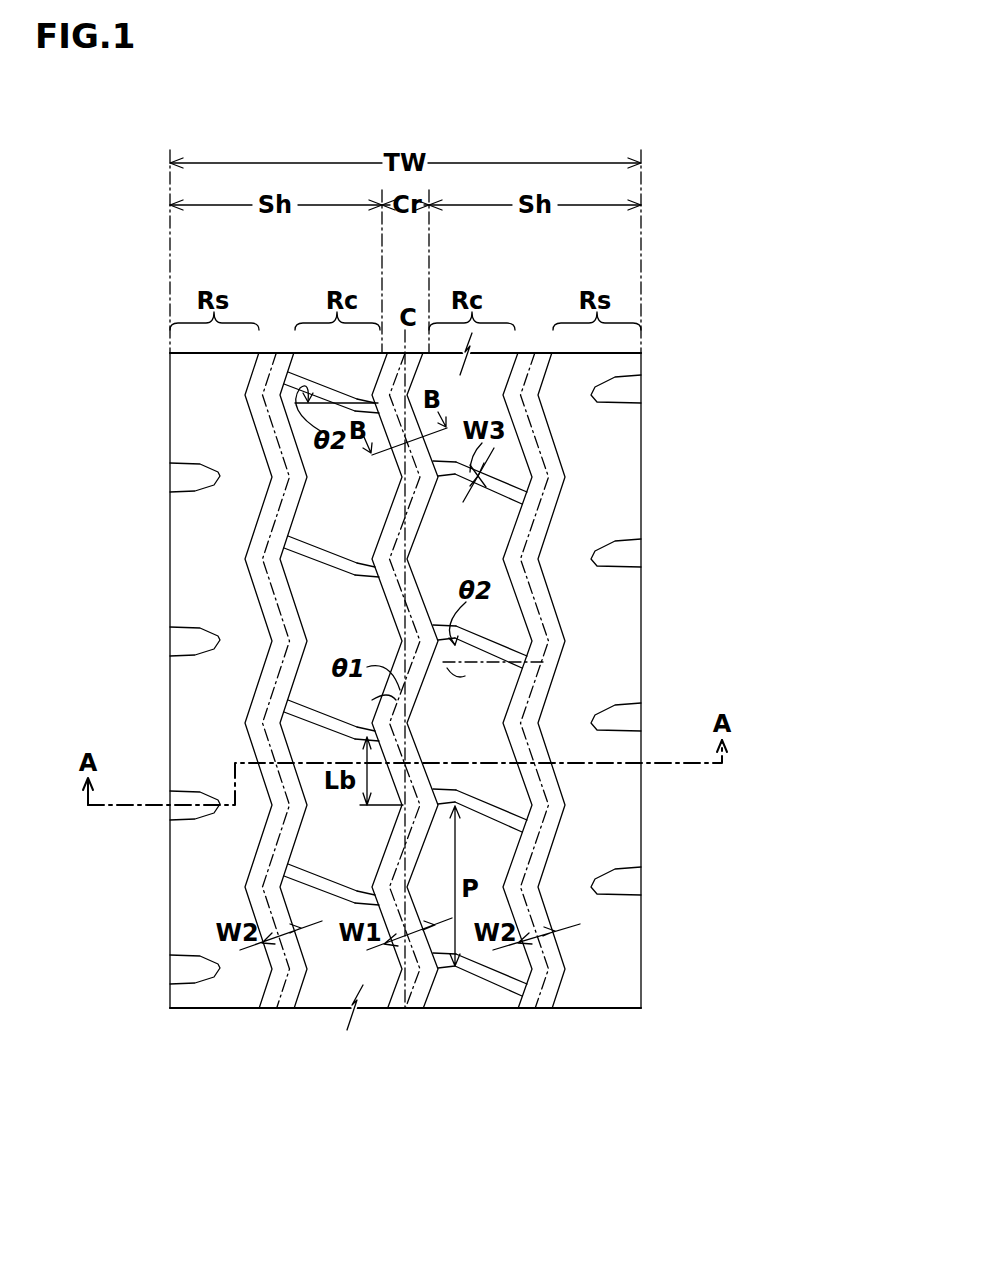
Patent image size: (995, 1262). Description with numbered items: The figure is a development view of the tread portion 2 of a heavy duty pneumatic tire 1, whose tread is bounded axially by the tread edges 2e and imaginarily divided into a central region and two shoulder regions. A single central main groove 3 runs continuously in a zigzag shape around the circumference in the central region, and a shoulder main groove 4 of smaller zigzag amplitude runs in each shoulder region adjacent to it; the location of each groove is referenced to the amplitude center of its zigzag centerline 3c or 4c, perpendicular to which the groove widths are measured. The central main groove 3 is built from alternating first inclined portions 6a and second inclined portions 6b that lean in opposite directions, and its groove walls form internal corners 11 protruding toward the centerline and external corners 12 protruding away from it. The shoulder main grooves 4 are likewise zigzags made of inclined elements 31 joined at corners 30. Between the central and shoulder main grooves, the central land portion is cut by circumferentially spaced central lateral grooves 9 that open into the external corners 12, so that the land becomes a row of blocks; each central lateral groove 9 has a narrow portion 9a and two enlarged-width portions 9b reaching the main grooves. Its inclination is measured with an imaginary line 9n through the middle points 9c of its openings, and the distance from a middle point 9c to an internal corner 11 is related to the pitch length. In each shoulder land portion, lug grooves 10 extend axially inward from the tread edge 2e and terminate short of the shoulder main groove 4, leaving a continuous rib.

The heavy duty pneumatic tire 1 is at (695, 252).
The tread portion 2 is at (676, 333).
The tread edge 2e is at (170, 400).
The central main groove 3 is at (395, 352).
The zigzag centerline of central main groove 3c is at (402, 1018).
The shoulder main groove 4 is at (275, 352).
The zigzag centerline of shoulder main groove 4c is at (272, 1018).
The first inclined portion 6a is at (412, 525).
The second inclined portion 6b is at (238, 652).
The central lateral groove 9 is at (413, 684).
The narrow portion 9a is at (345, 560).
The enlarged-width portion 9b is at (287, 540).
The middle point of opening 9c is at (373, 720).
The imaginary line 9n is at (522, 653).
The lug groove 10 is at (197, 478).
The internal corner 11 is at (397, 477).
The external corner 12 is at (442, 493).
The corner 30 is at (265, 810).
The inclined element 31 is at (267, 848).